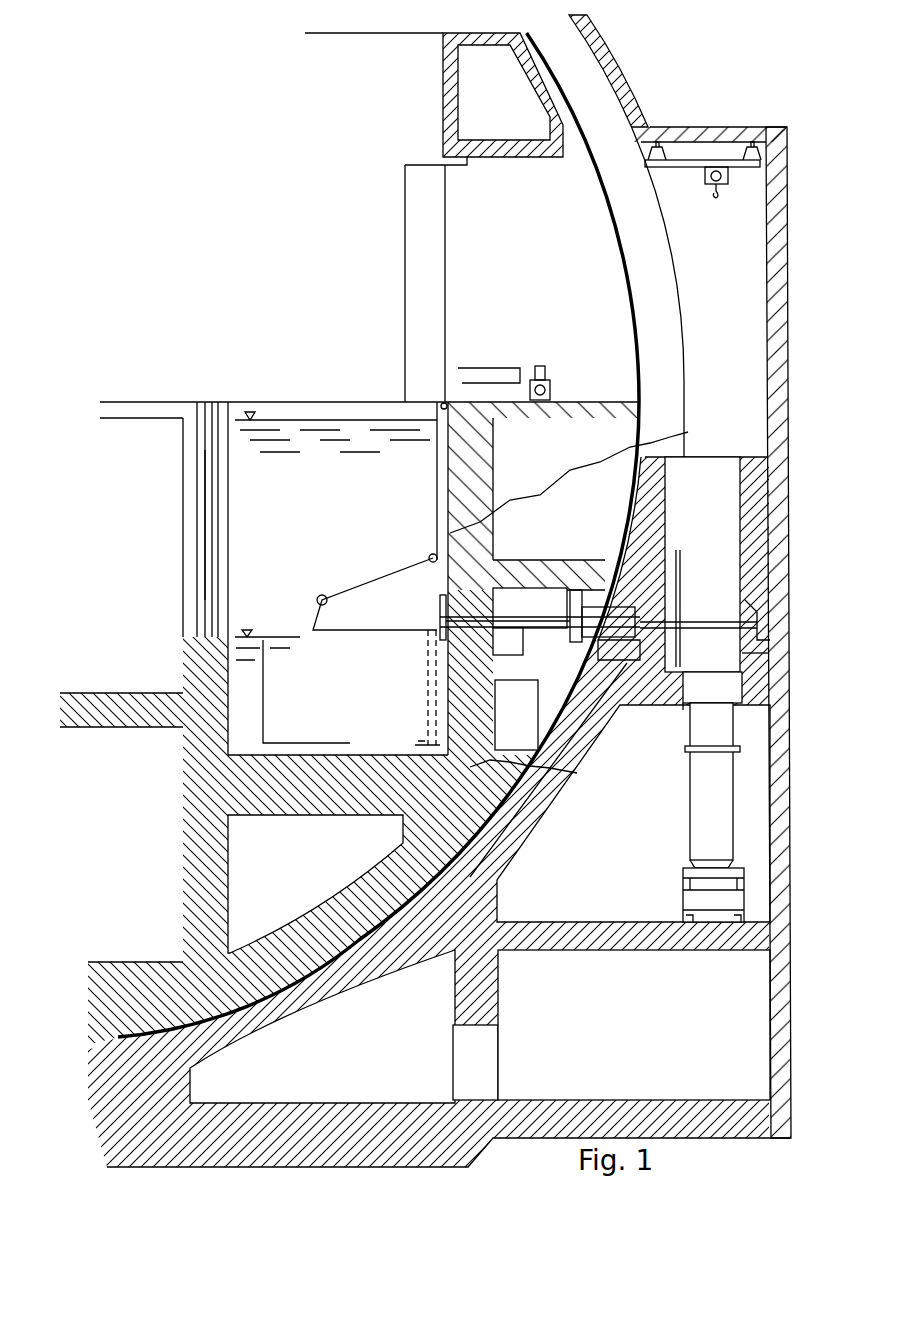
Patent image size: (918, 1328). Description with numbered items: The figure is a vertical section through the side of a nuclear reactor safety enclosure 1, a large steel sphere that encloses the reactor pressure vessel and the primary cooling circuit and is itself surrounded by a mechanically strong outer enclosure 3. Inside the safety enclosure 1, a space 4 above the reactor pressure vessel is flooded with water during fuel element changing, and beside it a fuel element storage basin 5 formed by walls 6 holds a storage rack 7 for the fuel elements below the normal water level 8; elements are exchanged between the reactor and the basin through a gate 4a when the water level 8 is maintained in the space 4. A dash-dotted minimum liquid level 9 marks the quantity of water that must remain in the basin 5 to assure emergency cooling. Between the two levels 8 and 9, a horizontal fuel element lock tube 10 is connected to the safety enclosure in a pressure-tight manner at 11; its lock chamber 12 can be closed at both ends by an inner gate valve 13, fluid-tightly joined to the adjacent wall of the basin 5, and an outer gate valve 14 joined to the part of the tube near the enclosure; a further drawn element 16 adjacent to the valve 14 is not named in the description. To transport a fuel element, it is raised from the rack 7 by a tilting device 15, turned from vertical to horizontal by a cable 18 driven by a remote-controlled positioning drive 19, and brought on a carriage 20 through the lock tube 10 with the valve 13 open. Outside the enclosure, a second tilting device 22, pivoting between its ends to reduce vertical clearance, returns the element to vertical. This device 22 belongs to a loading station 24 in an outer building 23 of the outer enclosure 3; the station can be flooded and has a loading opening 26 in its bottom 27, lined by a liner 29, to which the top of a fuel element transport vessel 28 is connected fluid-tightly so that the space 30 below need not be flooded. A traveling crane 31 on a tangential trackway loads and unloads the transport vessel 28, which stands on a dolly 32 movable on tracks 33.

The safety enclosure 1 is at (515, 853).
The outer enclosure 3 is at (618, 75).
The space 4 is at (140, 627).
The gate 4a is at (220, 492).
The fuel element storage basin 5 is at (251, 705).
The walls 6 is at (190, 765).
The storage rack 7 is at (296, 727).
The normal water level 8 is at (297, 418).
The minimum liquid level 9 is at (237, 637).
The fuel element lock tube 10 is at (530, 622).
The pressure-tight connection 11 is at (598, 648).
The lock chamber 12 is at (516, 617).
The inner gate valve 13 is at (440, 613).
The outer gate valve 14 is at (572, 600).
The tilting device 15 is at (425, 668).
The coupling 16 is at (560, 680).
The cable 18 is at (382, 583).
The remote-controlled positioning drive 19 is at (550, 390).
The carriage 20 is at (525, 685).
The second tilting device 22 is at (760, 606).
The outer building 23 is at (788, 407).
The loading station 24 is at (769, 655).
The loading opening 26 is at (745, 686).
The bottom 27 is at (663, 697).
The fuel element transport vessel 28 is at (690, 803).
The liner 29 is at (735, 707).
The space 30 is at (545, 912).
The traveling crane 31 is at (718, 188).
The dolly 32 is at (690, 893).
The tracks 33 is at (690, 917).